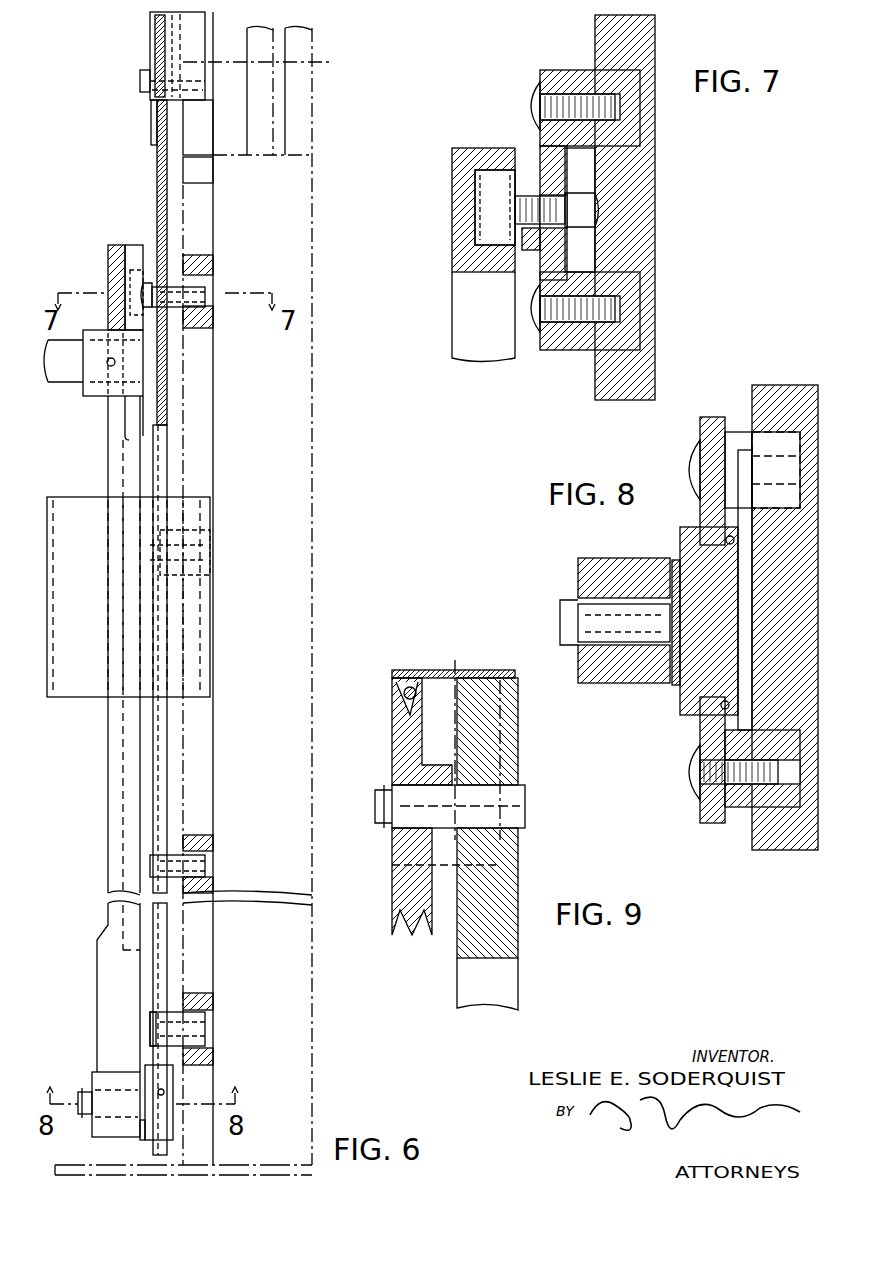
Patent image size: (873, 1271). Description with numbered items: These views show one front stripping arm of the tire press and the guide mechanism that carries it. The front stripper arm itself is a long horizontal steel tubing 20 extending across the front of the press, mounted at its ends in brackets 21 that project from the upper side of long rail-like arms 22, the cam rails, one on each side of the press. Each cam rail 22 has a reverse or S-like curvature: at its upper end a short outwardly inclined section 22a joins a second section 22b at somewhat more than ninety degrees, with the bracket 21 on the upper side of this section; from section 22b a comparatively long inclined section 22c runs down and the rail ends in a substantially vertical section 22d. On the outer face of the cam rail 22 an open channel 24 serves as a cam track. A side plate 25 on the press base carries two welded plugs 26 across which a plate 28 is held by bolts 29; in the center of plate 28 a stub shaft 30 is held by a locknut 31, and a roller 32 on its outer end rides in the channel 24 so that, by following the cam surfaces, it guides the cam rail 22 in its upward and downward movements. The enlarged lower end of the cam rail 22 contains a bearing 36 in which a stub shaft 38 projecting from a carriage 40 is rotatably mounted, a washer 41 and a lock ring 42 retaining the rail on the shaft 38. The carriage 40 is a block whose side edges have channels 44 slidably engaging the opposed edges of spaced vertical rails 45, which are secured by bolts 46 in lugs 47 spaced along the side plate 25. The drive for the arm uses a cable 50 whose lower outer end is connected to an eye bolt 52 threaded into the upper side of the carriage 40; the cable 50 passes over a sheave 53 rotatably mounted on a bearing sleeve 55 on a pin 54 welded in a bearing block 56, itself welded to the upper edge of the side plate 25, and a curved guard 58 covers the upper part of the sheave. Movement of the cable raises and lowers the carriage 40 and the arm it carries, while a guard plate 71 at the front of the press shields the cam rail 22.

In FIG. 6, the steel tubing 20 is at (70, 378).
In FIG. 6, the bracket 21 is at (118, 405).
In FIG. 6, the cam rail 22 is at (108, 760).
In FIG. 7, the cam rail 22 is at (452, 327).
In FIG. 8, the cam rail 22 is at (590, 683).
In FIG. 6, the outwardly inclined section 22a is at (133, 245).
In FIG. 7, the outwardly inclined section 22a is at (452, 250).
In FIG. 6, the second section 22b is at (118, 470).
In FIG. 7, the second section 22b is at (482, 360).
In FIG. 6, the inclined section 22c is at (108, 815).
In FIG. 6, the vertical section 22d is at (115, 910).
In FIG. 6, the open channel 24 is at (115, 245).
In FIG. 7, the open channel 24 is at (492, 170).
In FIG. 6, the side plate 25 is at (208, 418).
In FIG. 7, the side plate 25 is at (640, 378).
In FIG. 8, the side plate 25 is at (778, 395).
In FIG. 9, the side plate 25 is at (475, 1000).
In FIG. 6, the plug 26 is at (195, 312).
In FIG. 7, the plug 26 is at (630, 135).
In FIG. 6, the plate 28 is at (200, 268).
In FIG. 7, the plate 28 is at (560, 252).
In FIG. 6, the bolt 29 is at (145, 297).
In FIG. 7, the bolt 29 is at (530, 105).
In FIG. 7, the stub shaft 30 is at (540, 205).
In FIG. 7, the locknut 31 is at (595, 213).
In FIG. 6, the roller 32 is at (128, 290).
In FIG. 7, the roller 32 is at (482, 205).
In FIG. 6, the bearing 36 is at (86, 1095).
In FIG. 8, the bearing 36 is at (640, 683).
In FIG. 6, the stub shaft 38 is at (110, 1105).
In FIG. 8, the stub shaft 38 is at (582, 607).
In FIG. 6, the carriage 40 is at (170, 1085).
In FIG. 8, the carriage 40 is at (725, 650).
In FIG. 6, the washer 41 is at (148, 1125).
In FIG. 8, the washer 41 is at (676, 685).
In FIG. 6, the lock ring 42 is at (88, 1120).
In FIG. 8, the lock ring 42 is at (572, 650).
In FIG. 6, the channel 44 is at (165, 1093).
In FIG. 8, the channel 44 is at (734, 542).
In FIG. 6, the vertical rail 45 is at (167, 800).
In FIG. 8, the vertical rail 45 is at (700, 515).
In FIG. 8, the bolt 46 is at (688, 462).
In FIG. 6, the lug 47 is at (205, 540).
In FIG. 8, the lug 47 is at (742, 432).
In FIG. 6, the cable 50 is at (167, 358).
In FIG. 9, the cable 50 is at (404, 693).
In FIG. 6, the eye bolt 52 is at (195, 1032).
In FIG. 6, the sheave 53 is at (152, 143).
In FIG. 9, the sheave 53 is at (400, 762).
In FIG. 6, the pin 54 is at (172, 81).
In FIG. 9, the pin 54 is at (495, 796).
In FIG. 6, the bearing sleeve 55 is at (266, 63).
In FIG. 9, the bearing sleeve 55 is at (452, 785).
In FIG. 6, the bearing block 56 is at (200, 112).
In FIG. 9, the bearing block 56 is at (510, 880).
In FIG. 6, the curved guard 58 is at (198, 40).
In FIG. 9, the curved guard 58 is at (425, 670).
In FIG. 6, the guard plate 71 is at (75, 697).